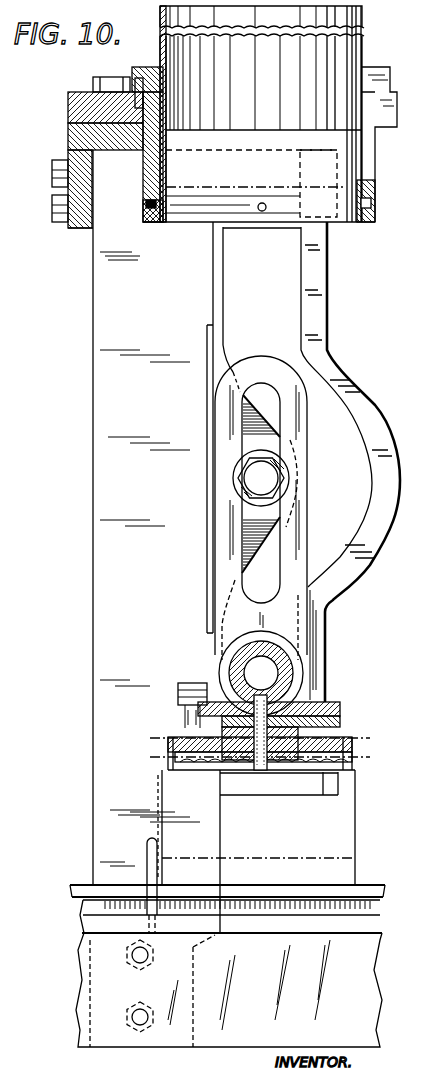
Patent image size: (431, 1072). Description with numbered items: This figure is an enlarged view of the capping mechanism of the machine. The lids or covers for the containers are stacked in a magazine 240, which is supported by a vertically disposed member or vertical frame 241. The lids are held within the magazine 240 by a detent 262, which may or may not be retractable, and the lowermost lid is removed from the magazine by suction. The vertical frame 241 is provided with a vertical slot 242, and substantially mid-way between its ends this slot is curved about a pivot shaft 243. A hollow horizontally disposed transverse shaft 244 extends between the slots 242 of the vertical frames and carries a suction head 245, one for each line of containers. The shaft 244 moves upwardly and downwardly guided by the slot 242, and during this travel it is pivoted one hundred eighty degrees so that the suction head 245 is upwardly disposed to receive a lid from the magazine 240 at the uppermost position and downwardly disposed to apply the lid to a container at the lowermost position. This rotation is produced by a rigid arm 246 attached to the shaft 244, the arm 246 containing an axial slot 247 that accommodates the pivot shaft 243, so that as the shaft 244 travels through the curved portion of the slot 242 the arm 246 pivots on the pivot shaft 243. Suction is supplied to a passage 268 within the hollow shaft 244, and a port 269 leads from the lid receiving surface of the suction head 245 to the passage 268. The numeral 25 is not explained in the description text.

The magazine 240 is at (160, 10).
The detent 262 is at (170, 224).
The vertical frame 241 is at (102, 427).
The vertical slot 242 is at (290, 283).
The axial slot 247 is at (265, 402).
The pivot shaft 243 is at (258, 480).
The arm 246 is at (297, 567).
The hollow transverse shaft 244 is at (281, 646).
The passage 268 is at (258, 672).
The suction head 245 is at (297, 760).
The port 269 is at (261, 762).
The base frame 25 is at (0, 1040).